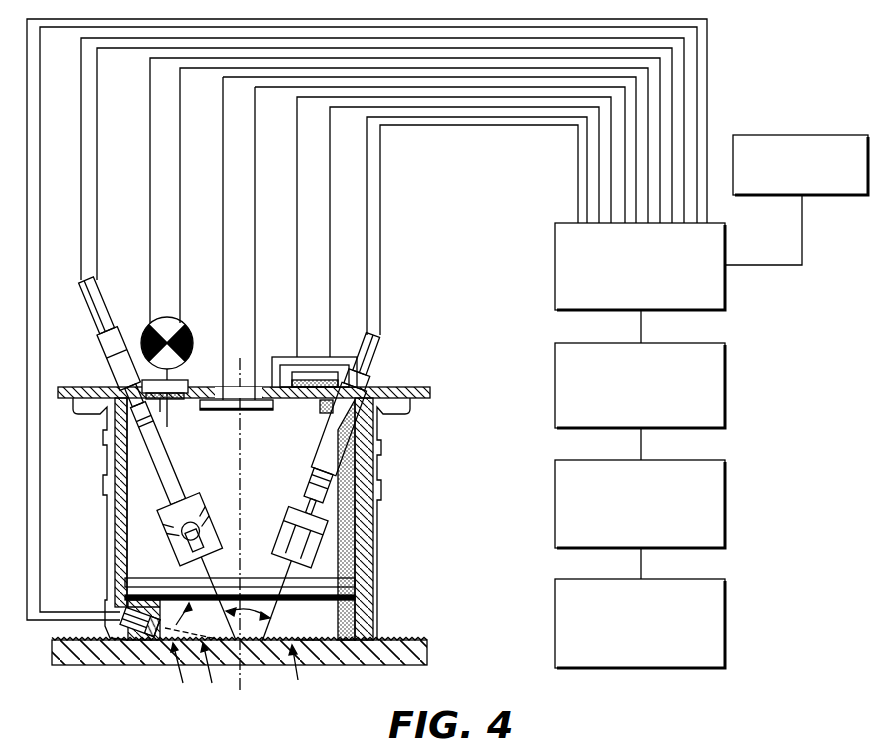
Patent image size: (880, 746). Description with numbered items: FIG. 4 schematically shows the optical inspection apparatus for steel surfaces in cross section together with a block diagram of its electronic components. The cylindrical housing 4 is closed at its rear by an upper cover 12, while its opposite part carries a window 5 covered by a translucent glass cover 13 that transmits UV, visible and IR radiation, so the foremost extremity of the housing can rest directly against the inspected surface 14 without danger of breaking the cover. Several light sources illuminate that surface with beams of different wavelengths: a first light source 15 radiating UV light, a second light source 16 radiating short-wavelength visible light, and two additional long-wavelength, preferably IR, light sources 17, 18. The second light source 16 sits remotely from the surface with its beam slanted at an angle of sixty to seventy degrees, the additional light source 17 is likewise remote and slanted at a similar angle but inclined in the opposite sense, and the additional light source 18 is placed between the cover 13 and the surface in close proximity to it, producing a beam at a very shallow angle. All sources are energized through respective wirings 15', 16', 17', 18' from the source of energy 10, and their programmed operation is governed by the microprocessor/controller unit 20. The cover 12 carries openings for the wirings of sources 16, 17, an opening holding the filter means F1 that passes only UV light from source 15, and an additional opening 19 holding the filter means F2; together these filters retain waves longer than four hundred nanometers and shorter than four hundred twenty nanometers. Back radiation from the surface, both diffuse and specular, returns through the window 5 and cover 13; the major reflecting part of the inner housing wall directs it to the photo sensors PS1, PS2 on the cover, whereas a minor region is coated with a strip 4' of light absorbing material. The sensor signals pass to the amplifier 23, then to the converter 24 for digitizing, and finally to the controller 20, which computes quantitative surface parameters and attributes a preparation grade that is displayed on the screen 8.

The housing 4 is at (241, 519).
The strip of light absorbing material 4' is at (369, 520).
The window 5 is at (308, 628).
The screen 8 is at (725, 651).
The source of energy 10 is at (756, 143).
The upper cover 12 is at (429, 387).
The cover 13 is at (373, 605).
The inspected surface 14 is at (433, 640).
The first light source 15 is at (177, 358).
The wiring 15' is at (405, 190).
The second light source 16 is at (161, 460).
The wiring 16' is at (382, 159).
The additional light source 17 is at (318, 488).
The wiring 17' is at (477, 226).
The additional light source 18 is at (169, 652).
The wiring 18' is at (367, 319).
The additional opening 19 is at (303, 402).
The microprocessor/controller unit 20 is at (725, 531).
The amplifier 23 is at (725, 298).
The converter 24 is at (725, 406).
The filter means F1 is at (184, 380).
The filter means F2 is at (300, 386).
The photo sensor PS1 is at (228, 411).
The photo sensor PS2 is at (342, 370).